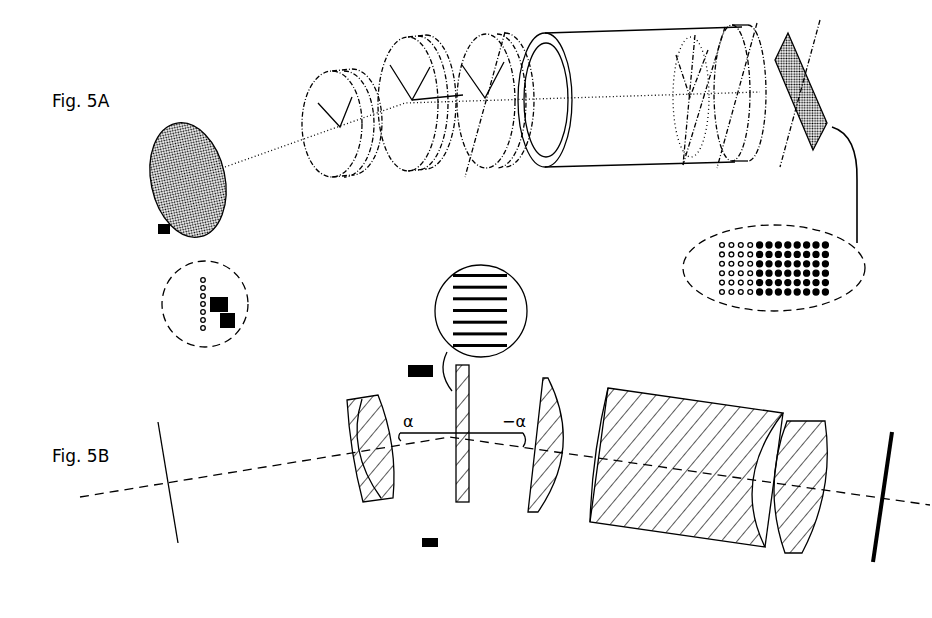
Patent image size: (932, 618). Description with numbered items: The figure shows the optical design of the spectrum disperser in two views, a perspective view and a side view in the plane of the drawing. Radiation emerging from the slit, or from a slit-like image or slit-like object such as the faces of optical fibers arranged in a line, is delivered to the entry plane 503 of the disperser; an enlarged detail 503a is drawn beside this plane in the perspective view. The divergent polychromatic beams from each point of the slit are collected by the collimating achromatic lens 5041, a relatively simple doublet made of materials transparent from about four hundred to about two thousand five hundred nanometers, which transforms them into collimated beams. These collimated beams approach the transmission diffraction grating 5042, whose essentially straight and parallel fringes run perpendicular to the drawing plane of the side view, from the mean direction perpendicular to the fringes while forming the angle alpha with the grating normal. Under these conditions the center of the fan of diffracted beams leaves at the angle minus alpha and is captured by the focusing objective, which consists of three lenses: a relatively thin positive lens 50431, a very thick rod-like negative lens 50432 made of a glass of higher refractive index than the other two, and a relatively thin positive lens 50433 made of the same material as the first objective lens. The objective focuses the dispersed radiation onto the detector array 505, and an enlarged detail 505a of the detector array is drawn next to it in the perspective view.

In FIG. 5A, the entry plane 503 is at (197, 180).
In FIG. 5B, the entry plane 503 is at (172, 494).
In FIG. 5A, the enlarged view of light source pattern 503a is at (227, 304).
In FIG. 5A, the collimating achromatic lens 5041 is at (348, 138).
In FIG. 5B, the collimating achromatic lens 5041 is at (375, 473).
In FIG. 5A, the transmission diffraction grating 5042 is at (417, 121).
In FIG. 5B, the transmission diffraction grating 5042 is at (495, 405).
In FIG. 5A, the relatively thin positive lens 50431 is at (495, 119).
In FIG. 5B, the relatively thin positive lens 50431 is at (540, 465).
In FIG. 5A, the rod-like negative lens 50432 is at (630, 117).
In FIG. 5B, the rod-like negative lens 50432 is at (686, 492).
In FIG. 5A, the relatively thin positive lens 50433 is at (724, 115).
In FIG. 5B, the relatively thin positive lens 50433 is at (793, 509).
In FIG. 5A, the detector array 505 is at (804, 113).
In FIG. 5B, the detector array 505 is at (870, 514).
In FIG. 5A, the enlarged view of image spot pattern 505a is at (774, 233).